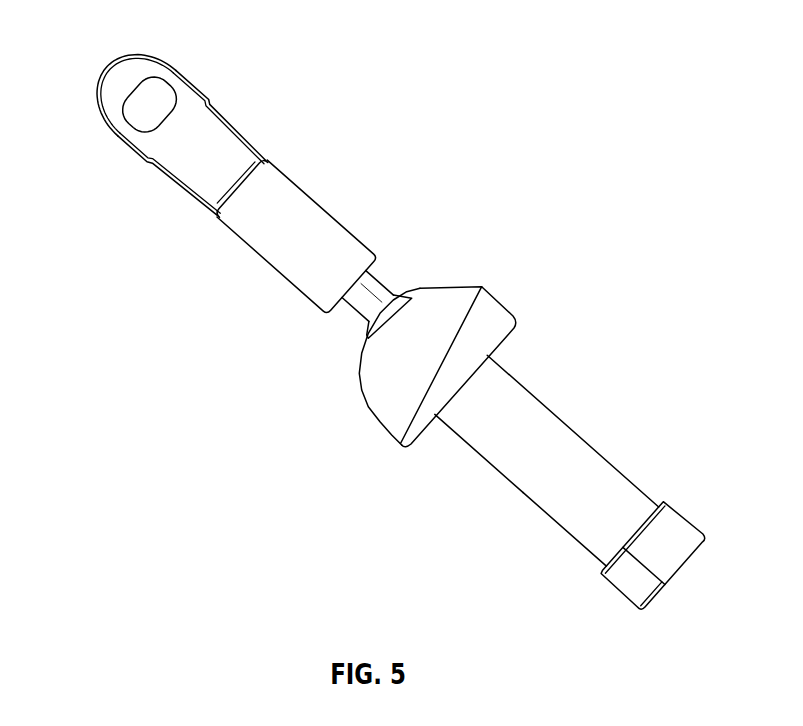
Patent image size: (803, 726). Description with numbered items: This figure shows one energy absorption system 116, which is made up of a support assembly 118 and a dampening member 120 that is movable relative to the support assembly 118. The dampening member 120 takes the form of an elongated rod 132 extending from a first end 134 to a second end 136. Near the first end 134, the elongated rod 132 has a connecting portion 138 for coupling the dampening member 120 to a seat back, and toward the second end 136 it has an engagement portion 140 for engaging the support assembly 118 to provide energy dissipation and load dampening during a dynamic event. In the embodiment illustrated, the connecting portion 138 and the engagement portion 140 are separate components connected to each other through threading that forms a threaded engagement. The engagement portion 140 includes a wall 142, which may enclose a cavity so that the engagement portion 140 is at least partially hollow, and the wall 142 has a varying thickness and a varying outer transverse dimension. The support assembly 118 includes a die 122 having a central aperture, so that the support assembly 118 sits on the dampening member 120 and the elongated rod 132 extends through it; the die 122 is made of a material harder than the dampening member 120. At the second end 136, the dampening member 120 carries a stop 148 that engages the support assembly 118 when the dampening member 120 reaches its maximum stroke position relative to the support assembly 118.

The energy absorption system 116 is at (132, 268).
The first end 134 is at (108, 72).
The connecting portion 138 is at (250, 228).
The support assembly 118 is at (328, 265).
The dampening member 120 is at (493, 318).
The die 122 is at (388, 411).
The elongated rod 132 is at (604, 474).
The engagement portion 140 is at (517, 467).
The wall 142 is at (583, 530).
The second end 136 is at (663, 586).
The stop 148 is at (663, 526).